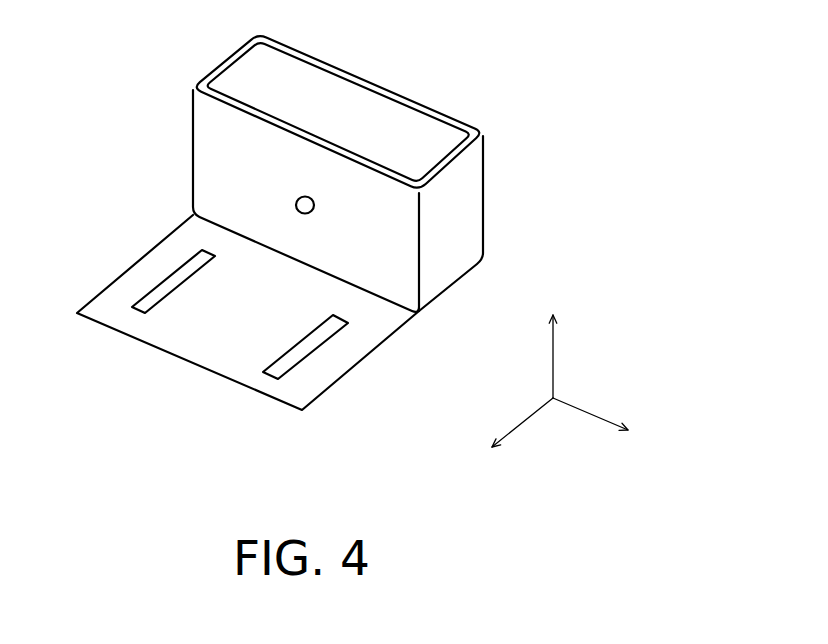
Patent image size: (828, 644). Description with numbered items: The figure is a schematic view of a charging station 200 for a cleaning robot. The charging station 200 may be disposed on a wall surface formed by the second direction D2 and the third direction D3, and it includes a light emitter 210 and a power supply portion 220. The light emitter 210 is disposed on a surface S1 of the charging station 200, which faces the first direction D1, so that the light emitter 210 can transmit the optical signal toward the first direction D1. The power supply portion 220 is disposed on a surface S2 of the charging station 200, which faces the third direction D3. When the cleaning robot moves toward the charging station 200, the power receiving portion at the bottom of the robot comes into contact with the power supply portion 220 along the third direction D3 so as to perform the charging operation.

The charging station 200 is at (432, 75).
The light emitter 210 is at (296, 202).
The power supply portion 220 is at (300, 349).
The surface S1 is at (215, 123).
The surface S2 is at (115, 297).
The first direction D1 is at (510, 444).
The second direction D2 is at (611, 425).
The third direction D3 is at (553, 336).